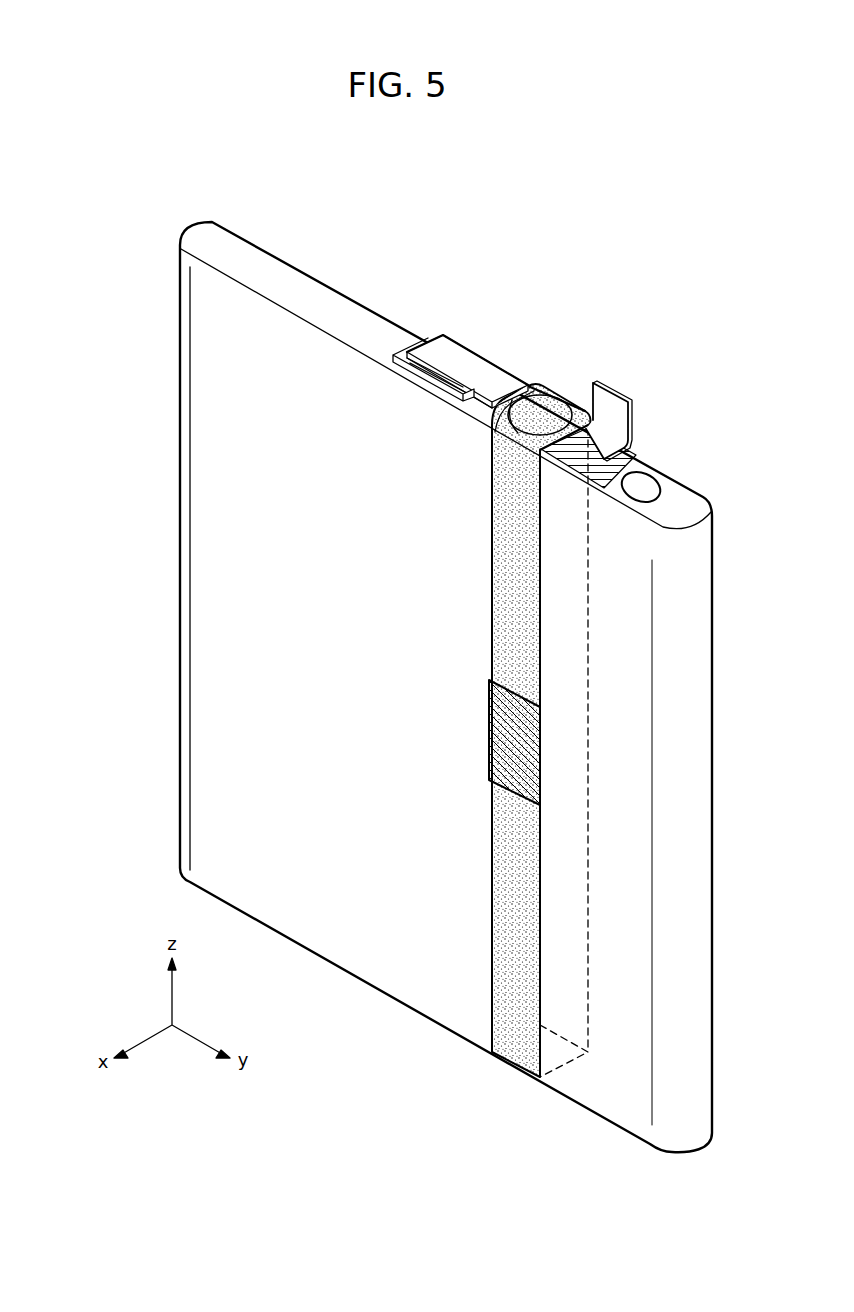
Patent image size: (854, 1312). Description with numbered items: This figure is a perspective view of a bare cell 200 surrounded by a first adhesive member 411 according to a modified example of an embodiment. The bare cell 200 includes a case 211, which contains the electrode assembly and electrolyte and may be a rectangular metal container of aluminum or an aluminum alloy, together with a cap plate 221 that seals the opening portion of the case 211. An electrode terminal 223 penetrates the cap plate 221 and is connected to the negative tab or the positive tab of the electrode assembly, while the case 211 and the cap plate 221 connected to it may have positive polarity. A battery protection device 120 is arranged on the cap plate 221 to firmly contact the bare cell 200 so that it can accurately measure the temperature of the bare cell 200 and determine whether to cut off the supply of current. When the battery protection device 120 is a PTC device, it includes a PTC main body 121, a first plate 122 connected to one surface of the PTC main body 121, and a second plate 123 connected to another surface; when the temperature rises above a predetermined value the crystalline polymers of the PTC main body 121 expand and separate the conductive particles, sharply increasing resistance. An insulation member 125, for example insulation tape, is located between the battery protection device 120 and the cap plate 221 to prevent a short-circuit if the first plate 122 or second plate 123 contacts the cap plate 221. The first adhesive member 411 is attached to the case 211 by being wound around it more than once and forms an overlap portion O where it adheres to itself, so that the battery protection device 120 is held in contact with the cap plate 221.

The bare cell 200 is at (178, 523).
The case 211 is at (223, 728).
The cap plate 221 is at (215, 240).
The electrode terminal 223 is at (410, 360).
The battery protection device 120 is at (532, 245).
The PTC main body 121 is at (541, 403).
The first plate 122 is at (493, 368).
The second plate 123 is at (611, 403).
The insulation member 125 is at (604, 490).
The first adhesive member 411 is at (500, 630).
The overlap portion O is at (507, 735).